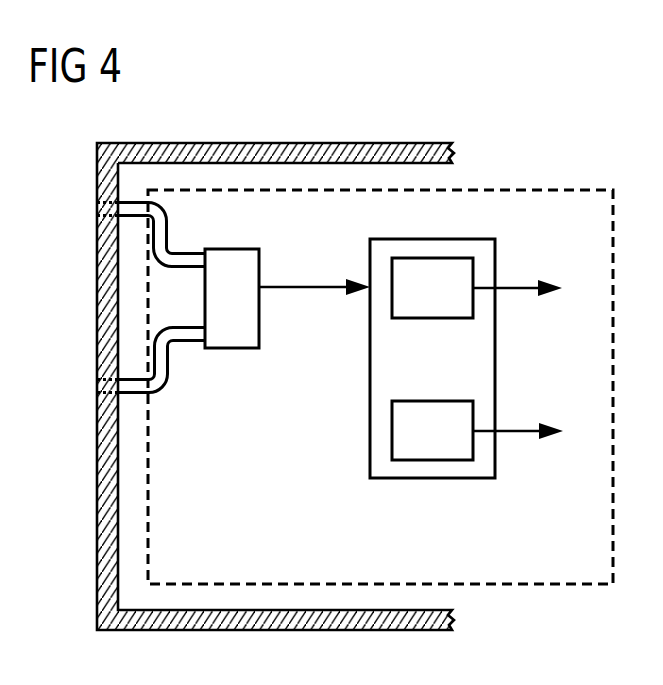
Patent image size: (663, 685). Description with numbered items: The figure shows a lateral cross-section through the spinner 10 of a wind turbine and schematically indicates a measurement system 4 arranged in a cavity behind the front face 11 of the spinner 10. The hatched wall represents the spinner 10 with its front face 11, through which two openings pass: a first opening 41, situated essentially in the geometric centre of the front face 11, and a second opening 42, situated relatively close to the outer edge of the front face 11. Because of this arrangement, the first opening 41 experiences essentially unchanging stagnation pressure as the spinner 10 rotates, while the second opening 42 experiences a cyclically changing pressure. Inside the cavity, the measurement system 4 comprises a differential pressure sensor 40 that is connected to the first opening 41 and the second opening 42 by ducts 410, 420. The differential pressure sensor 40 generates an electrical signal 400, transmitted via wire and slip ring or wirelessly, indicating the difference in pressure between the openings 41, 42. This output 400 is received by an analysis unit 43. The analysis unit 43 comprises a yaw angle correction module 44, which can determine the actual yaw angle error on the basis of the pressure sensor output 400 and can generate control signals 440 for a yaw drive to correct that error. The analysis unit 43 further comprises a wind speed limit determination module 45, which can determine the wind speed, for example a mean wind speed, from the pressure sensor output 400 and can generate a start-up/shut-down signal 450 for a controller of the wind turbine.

The measurement system 4 is at (590, 190).
The spinner 10 is at (296, 143).
The front face 11 is at (97, 527).
The differential pressure sensor 40 is at (233, 332).
The electrical signal 400 is at (303, 287).
The first opening 41 is at (100, 383).
The duct 410 is at (158, 378).
The second opening 42 is at (97, 210).
The duct 420 is at (168, 230).
The analysis unit 43 is at (432, 478).
The yaw angle correction module 44 is at (407, 297).
The wind speed limit determination module 45 is at (403, 432).
The control signals 440 is at (516, 288).
The start-up/shut-down signal 450 is at (515, 432).